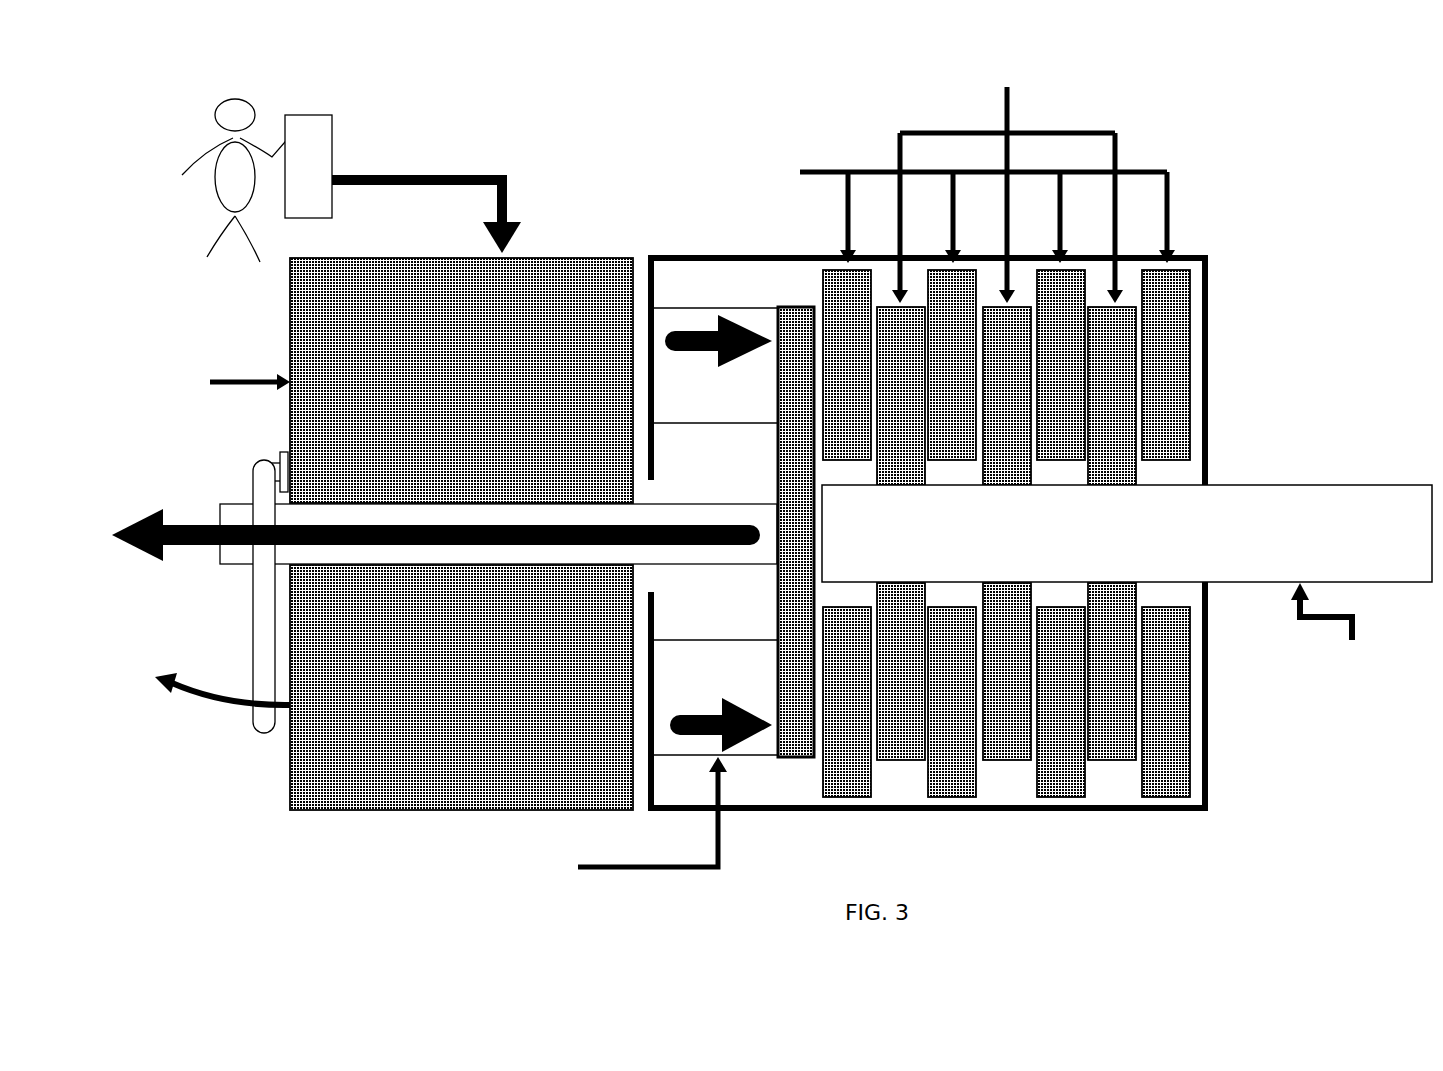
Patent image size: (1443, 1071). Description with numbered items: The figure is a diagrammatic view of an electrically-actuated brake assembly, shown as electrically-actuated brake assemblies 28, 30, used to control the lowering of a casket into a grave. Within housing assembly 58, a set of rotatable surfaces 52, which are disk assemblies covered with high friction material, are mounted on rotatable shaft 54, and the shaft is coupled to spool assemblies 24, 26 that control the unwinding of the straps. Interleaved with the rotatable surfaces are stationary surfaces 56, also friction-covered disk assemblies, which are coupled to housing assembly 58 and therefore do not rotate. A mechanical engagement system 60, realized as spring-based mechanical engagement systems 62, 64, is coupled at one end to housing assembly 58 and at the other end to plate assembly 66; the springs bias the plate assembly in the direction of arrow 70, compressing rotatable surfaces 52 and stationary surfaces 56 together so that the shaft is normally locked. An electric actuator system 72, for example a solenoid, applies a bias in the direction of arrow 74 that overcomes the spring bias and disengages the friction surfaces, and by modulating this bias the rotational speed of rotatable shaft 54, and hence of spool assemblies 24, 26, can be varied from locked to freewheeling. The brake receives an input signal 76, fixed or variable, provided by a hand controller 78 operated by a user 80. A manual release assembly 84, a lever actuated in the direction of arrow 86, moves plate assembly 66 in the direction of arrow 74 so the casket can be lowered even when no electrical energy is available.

The spool assembly 24 is at (1340, 631).
The spool assembly 26 is at (1321, 611).
The electrically-actuated brake assembly 28 is at (1081, 434).
The electrically-actuated brake assembly 30 is at (1006, 533).
The rotatable surfaces 52 is at (1007, 177).
The rotatable shaft 54 is at (1127, 533).
The stationary surfaces 56 is at (962, 210).
The housing assembly 58 is at (1222, 345).
The mechanical engagement system 60 is at (624, 819).
The spring-based mechanical engagement system 62 is at (715, 365).
The spring-based mechanical engagement system 64 is at (715, 697).
The plate assembly 66 is at (690, 328).
The arrow 70 is at (683, 715).
The electric actuator system 72 is at (229, 382).
The arrow 74 is at (444, 584).
The input signal 76 is at (415, 173).
The hand controller 78 is at (313, 122).
The user 80 is at (233, 118).
The manual release assembly 84 is at (262, 620).
The arrow 86 is at (182, 700).